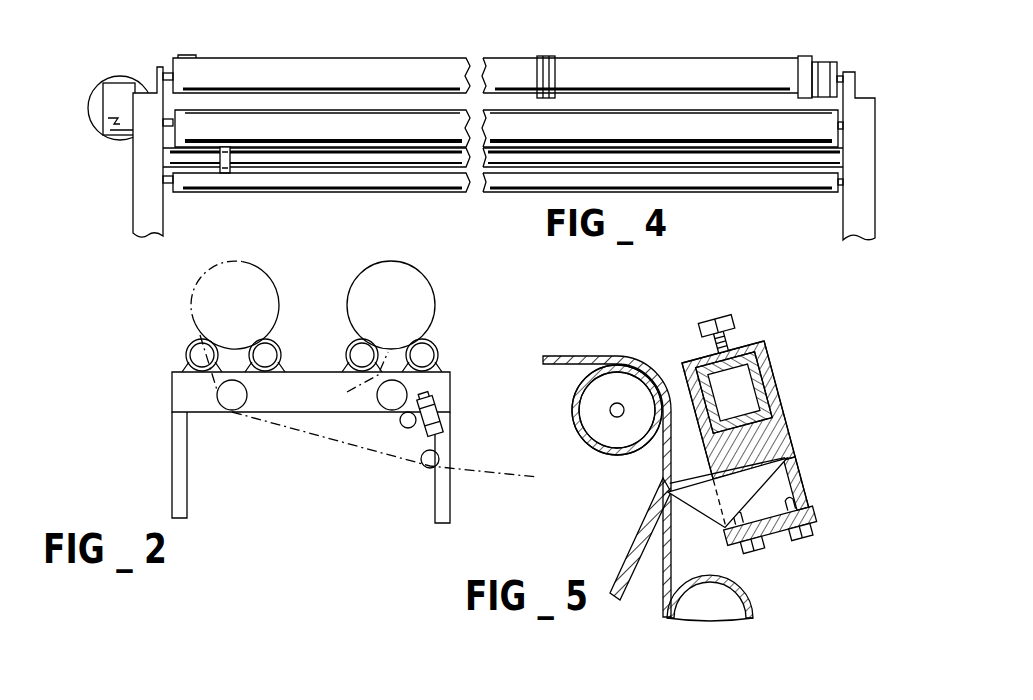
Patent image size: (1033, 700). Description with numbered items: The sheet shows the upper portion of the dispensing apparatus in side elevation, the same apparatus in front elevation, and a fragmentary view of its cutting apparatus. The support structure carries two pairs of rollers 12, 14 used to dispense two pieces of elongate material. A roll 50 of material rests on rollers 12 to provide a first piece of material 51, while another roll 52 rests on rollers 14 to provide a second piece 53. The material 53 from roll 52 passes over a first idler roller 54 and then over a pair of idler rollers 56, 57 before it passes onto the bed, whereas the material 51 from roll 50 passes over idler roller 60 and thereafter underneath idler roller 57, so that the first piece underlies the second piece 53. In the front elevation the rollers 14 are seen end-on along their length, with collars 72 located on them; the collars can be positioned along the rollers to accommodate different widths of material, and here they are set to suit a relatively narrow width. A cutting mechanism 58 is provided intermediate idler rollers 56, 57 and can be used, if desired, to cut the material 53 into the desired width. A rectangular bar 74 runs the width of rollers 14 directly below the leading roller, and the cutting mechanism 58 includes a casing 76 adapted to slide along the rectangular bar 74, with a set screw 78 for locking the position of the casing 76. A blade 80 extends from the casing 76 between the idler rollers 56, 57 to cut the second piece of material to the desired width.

In FIG. 2, the rollers 12 is at (190, 346).
In FIG. 4, the rollers 14 is at (352, 68).
In FIG. 2, the rollers 14 is at (355, 345).
In FIG. 2, the roll 50 is at (190, 292).
In FIG. 2, the first piece of material 51 is at (303, 436).
In FIG. 2, the roll 52 is at (350, 290).
In FIG. 2, the second piece of material 53 is at (351, 379).
In FIG. 5, the second piece of material 53 is at (660, 470).
In FIG. 2, the first idler roller 54 is at (405, 386).
In FIG. 2, the idler roller 56 is at (400, 421).
In FIG. 5, the idler roller 56 is at (620, 456).
In FIG. 2, the idler roller 57 is at (420, 466).
In FIG. 5, the idler roller 57 is at (748, 603).
In FIG. 4, the cutting mechanism 58 is at (229, 165).
In FIG. 2, the cutting mechanism 58 is at (443, 418).
In FIG. 5, the cutting mechanism 58 is at (790, 437).
In FIG. 2, the idler roller 60 is at (217, 394).
In FIG. 4, the collars 72 is at (543, 60).
In FIG. 4, the rectangular bar 74 is at (342, 158).
In FIG. 5, the rectangular bar 74 is at (768, 385).
In FIG. 5, the casing 76 is at (764, 350).
In FIG. 5, the set screw 78 is at (733, 321).
In FIG. 5, the blade 80 is at (690, 506).